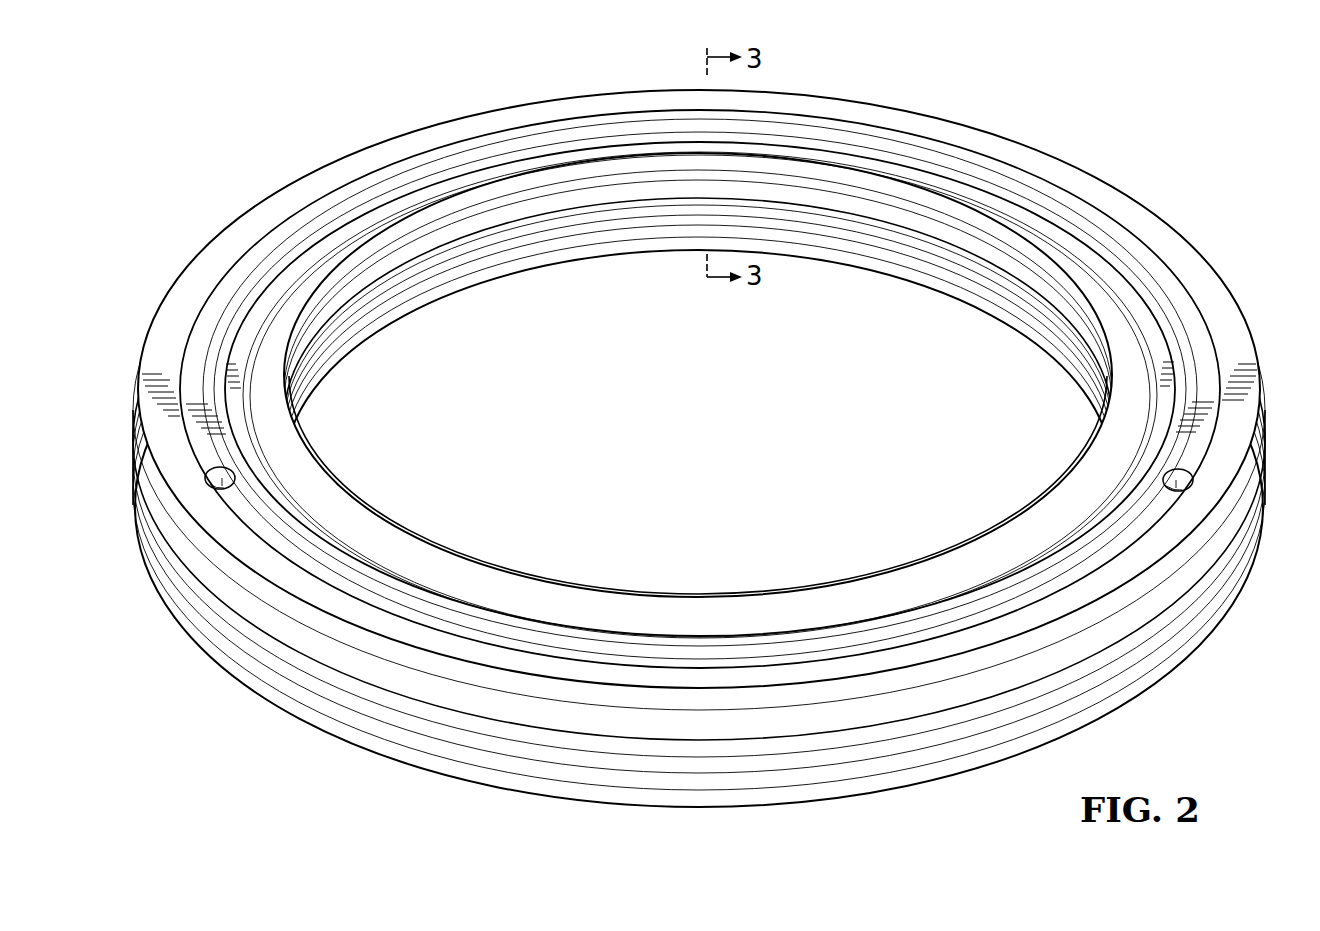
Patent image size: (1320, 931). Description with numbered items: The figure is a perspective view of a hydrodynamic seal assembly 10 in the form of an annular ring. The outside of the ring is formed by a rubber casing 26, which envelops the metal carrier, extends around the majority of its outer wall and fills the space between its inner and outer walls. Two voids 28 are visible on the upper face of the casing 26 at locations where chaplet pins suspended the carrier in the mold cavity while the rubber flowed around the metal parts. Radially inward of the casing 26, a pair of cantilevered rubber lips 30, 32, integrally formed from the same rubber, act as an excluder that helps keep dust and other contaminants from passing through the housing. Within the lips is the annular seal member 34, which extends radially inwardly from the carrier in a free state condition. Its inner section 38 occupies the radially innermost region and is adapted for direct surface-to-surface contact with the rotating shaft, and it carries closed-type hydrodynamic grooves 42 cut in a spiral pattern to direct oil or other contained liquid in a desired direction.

The seal assembly 10 is at (1008, 104).
The rubber casing 26 is at (310, 172).
The voids 28 is at (222, 480).
The cantilevered rubber lip 30 is at (1057, 260).
The cantilevered rubber lip 32 is at (1032, 288).
The annular seal member 34 is at (530, 272).
The inner section 38 is at (437, 300).
The grooves 42 is at (965, 262).